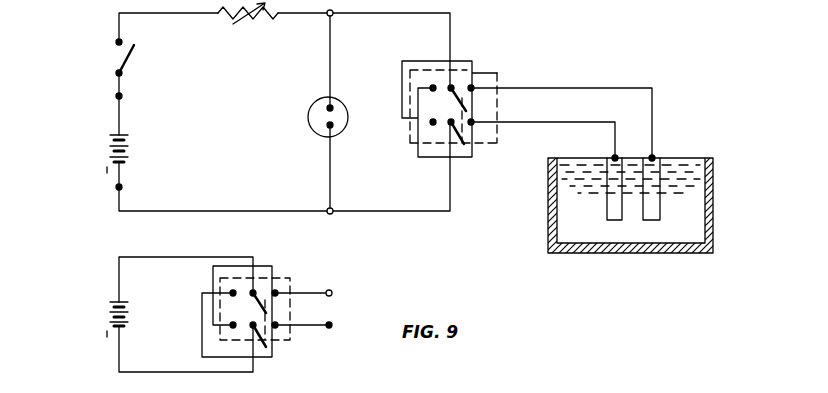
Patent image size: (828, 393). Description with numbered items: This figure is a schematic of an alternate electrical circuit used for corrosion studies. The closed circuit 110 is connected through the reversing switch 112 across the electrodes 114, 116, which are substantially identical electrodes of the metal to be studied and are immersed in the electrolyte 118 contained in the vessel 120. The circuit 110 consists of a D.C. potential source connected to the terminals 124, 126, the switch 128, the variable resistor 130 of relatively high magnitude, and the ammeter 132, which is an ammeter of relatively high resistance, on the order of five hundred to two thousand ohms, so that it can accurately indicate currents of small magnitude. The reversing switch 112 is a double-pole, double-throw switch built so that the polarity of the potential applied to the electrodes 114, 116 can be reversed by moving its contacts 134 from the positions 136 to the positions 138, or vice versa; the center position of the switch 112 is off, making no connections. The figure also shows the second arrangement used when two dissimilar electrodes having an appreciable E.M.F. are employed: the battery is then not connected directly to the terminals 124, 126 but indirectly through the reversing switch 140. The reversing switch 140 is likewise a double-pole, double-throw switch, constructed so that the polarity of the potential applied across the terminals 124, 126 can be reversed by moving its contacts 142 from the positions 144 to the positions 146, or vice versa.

The closed circuit 110 is at (241, 121).
The reversing switch 112 is at (484, 73).
The electrode 114 is at (606, 218).
The electrode 116 is at (663, 218).
The electrolyte 118 is at (672, 172).
The vessel 120 is at (638, 254).
The terminal 124 is at (123, 96).
The terminal 126 is at (123, 187).
The switch 128 is at (134, 61).
The variable resistor 130 is at (255, 21).
The ammeter 132 is at (318, 130).
The contacts 134 is at (467, 108).
The positions 136 is at (473, 88).
The positions 138 is at (433, 122).
The reversing switch 140 is at (282, 340).
The contacts 142 is at (257, 292).
The positions 144 is at (277, 324).
The positions 146 is at (233, 324).